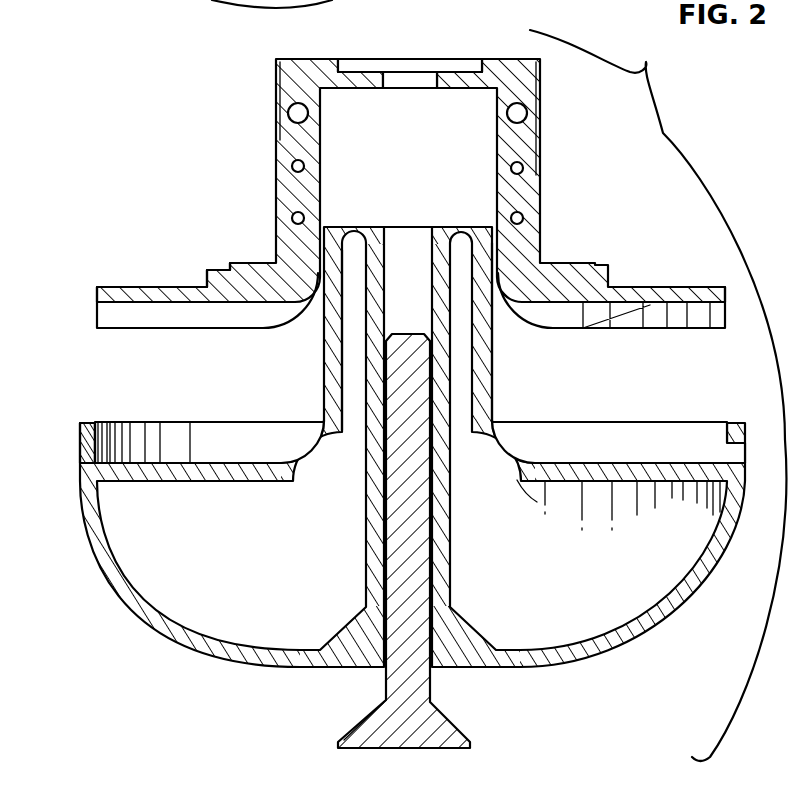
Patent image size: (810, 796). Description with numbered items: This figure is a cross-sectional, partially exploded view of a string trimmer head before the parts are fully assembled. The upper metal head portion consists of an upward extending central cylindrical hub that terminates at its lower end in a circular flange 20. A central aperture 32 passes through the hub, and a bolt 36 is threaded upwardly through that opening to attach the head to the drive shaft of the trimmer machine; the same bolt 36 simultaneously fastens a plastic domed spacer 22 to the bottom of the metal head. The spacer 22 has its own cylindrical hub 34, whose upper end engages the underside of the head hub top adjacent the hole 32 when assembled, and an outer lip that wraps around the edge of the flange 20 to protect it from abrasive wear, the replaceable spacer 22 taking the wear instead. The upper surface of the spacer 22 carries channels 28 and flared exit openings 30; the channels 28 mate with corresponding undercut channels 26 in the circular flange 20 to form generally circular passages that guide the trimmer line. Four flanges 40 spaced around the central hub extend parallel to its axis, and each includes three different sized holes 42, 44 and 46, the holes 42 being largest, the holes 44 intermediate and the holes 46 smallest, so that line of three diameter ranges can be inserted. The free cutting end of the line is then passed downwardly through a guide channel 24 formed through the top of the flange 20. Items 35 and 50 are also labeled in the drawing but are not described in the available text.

The circular flange 20 is at (652, 283).
The domed spacer 22 is at (565, 663).
The guide channel 24 is at (228, 263).
The undercut channels 26 is at (142, 303).
The channels 28 is at (180, 456).
The flared exit openings 30 is at (84, 452).
The central aperture 32 is at (432, 80).
The cylindrical hub of the spacer 34 is at (495, 349).
The flow channel 35 is at (385, 308).
The bolt 36 is at (432, 688).
The flanges 40 is at (411, 151).
The holes 42 is at (520, 117).
The holes 44 is at (513, 167).
The holes 46 is at (515, 218).
The upper body 50 is at (185, 17).